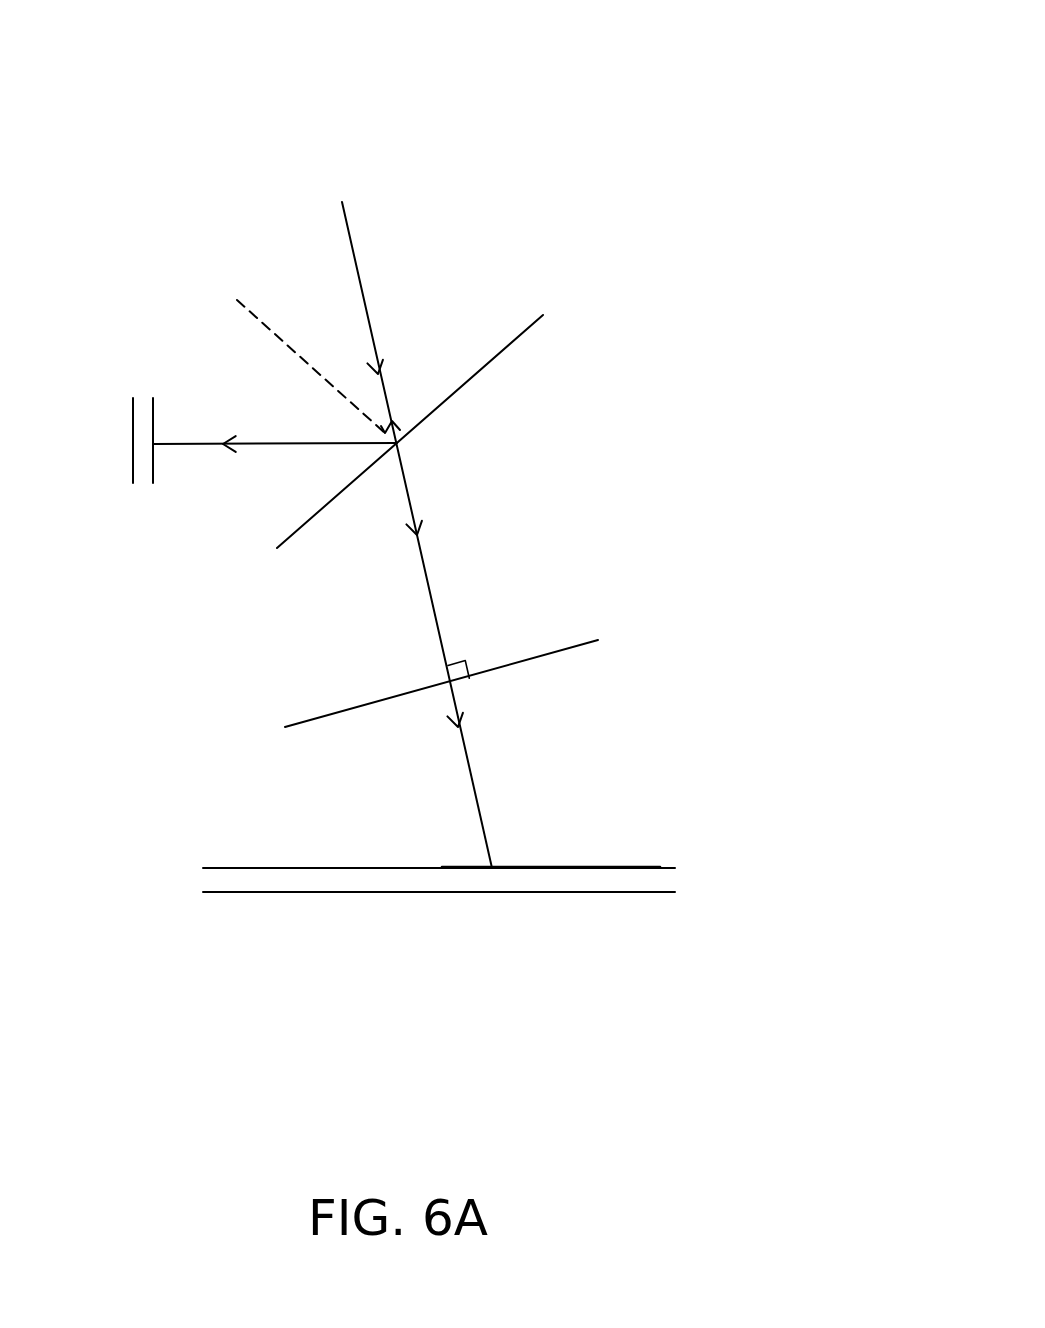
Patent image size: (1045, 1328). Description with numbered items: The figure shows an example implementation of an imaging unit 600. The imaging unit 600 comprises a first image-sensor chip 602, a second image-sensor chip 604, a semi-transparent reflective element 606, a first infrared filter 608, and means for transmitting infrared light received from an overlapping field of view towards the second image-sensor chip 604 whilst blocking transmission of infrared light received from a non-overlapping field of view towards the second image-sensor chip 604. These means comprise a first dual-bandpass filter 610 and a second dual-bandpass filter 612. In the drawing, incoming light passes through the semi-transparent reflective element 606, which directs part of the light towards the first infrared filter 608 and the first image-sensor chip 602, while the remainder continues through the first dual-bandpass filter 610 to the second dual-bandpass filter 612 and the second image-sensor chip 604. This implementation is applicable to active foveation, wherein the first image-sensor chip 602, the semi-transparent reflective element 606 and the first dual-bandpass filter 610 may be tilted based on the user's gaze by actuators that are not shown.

The imaging unit 600 is at (660, 62).
The first image-sensor chip 602 is at (101, 404).
The second image-sensor chip 604 is at (501, 873).
The semi-transparent reflective element 606 is at (441, 431).
The first infrared filter 608 is at (181, 403).
The first dual-bandpass filter 610 is at (499, 645).
The second dual-bandpass filter 612 is at (501, 849).